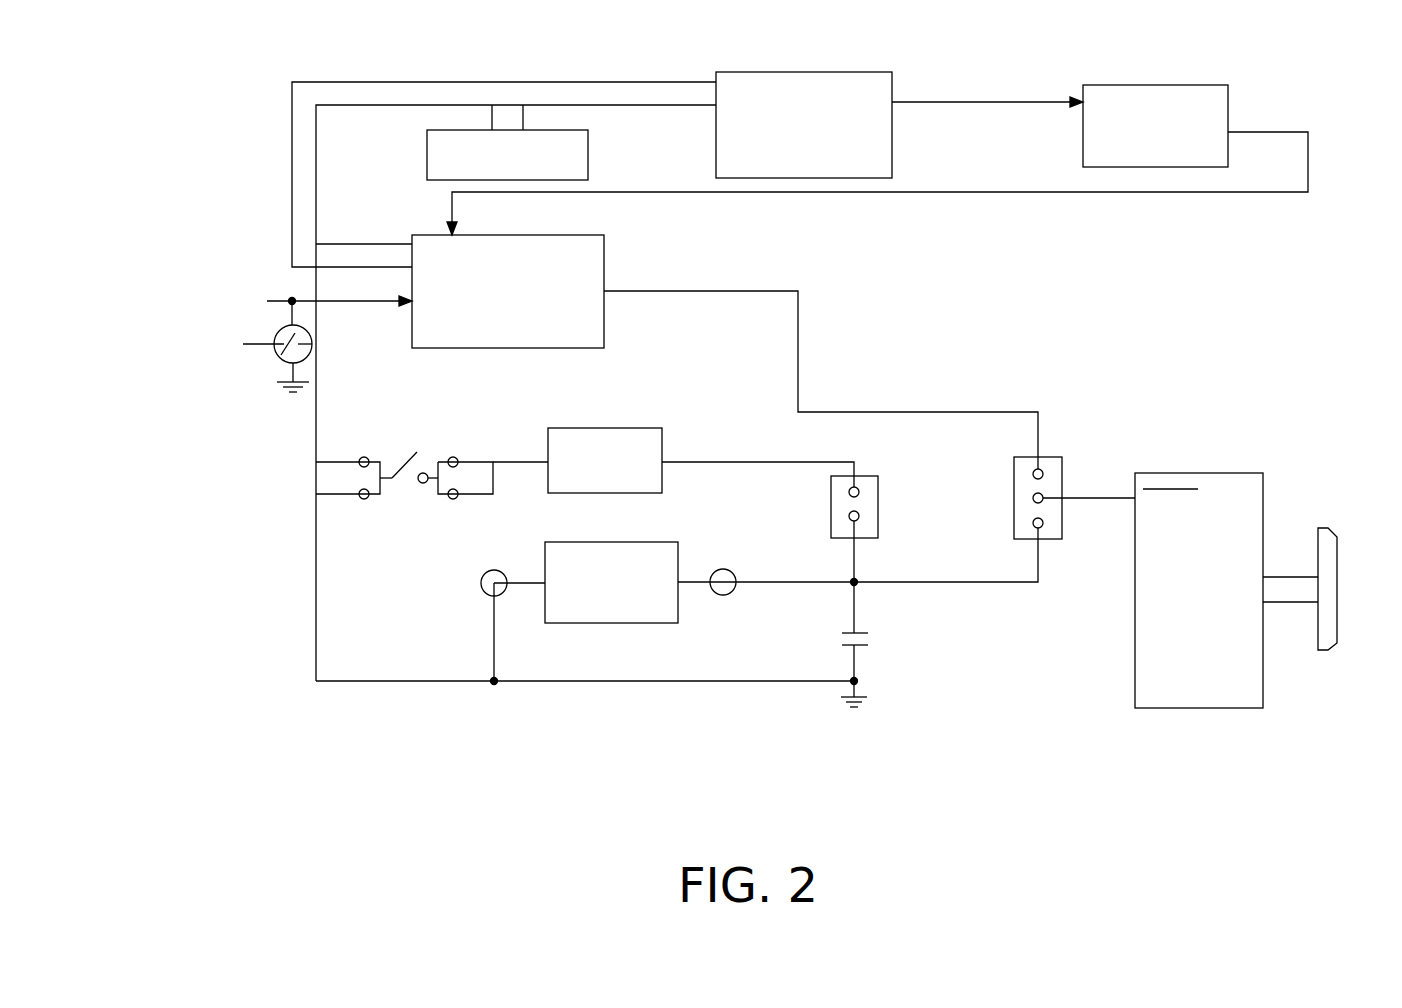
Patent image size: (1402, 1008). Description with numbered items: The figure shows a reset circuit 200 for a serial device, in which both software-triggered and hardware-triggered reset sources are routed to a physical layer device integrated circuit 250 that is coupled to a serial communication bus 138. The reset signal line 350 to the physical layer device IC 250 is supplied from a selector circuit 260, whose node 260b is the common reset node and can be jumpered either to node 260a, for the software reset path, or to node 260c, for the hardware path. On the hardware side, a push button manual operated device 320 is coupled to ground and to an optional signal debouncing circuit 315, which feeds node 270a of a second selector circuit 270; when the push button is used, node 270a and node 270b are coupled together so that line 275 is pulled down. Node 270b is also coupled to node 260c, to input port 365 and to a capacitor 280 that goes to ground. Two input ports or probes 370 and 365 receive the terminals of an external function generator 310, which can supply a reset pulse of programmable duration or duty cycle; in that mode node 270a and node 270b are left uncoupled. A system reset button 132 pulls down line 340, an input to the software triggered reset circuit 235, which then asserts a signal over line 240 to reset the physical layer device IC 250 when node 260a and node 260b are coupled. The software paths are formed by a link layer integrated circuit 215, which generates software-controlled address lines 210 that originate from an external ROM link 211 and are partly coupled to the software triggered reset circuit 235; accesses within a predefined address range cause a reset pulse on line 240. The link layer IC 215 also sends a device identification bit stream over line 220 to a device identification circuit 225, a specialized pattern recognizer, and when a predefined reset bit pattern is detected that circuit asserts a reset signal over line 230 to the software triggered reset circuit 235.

The reset circuit 200 is at (173, 73).
The address lines 210 is at (504, 381).
The external ROM link 211 is at (507, 155).
The IEEE 1394 link layer integrated circuit 215 is at (804, 125).
The line 220 is at (941, 104).
The device identification circuit 225 is at (1155, 126).
The line 230 is at (1040, 195).
The software triggered reset circuit 235 is at (508, 291).
The line 240 is at (898, 411).
The IEEE 1394 physical layer device integrated circuit 250 is at (1199, 590).
The selector circuit 260 is at (1038, 495).
The node 260a is at (1044, 474).
The node 260b is at (1033, 498).
The node 260c is at (1033, 523).
The selector circuit 270 is at (797, 522).
The node 270a is at (860, 492).
The node 270b is at (860, 516).
The line 275 is at (981, 584).
The capacitor 280 is at (872, 640).
The external function generator 310 is at (666, 542).
The signal debouncing circuit 315 is at (650, 428).
The push button manual operated device 320 is at (425, 460).
The line 340 is at (313, 300).
The reset signal line 350 is at (1096, 500).
The input port 365 is at (723, 571).
The input port 370 is at (491, 572).
The system reset button 132 is at (283, 362).
The serial communication bus 138 is at (1333, 550).